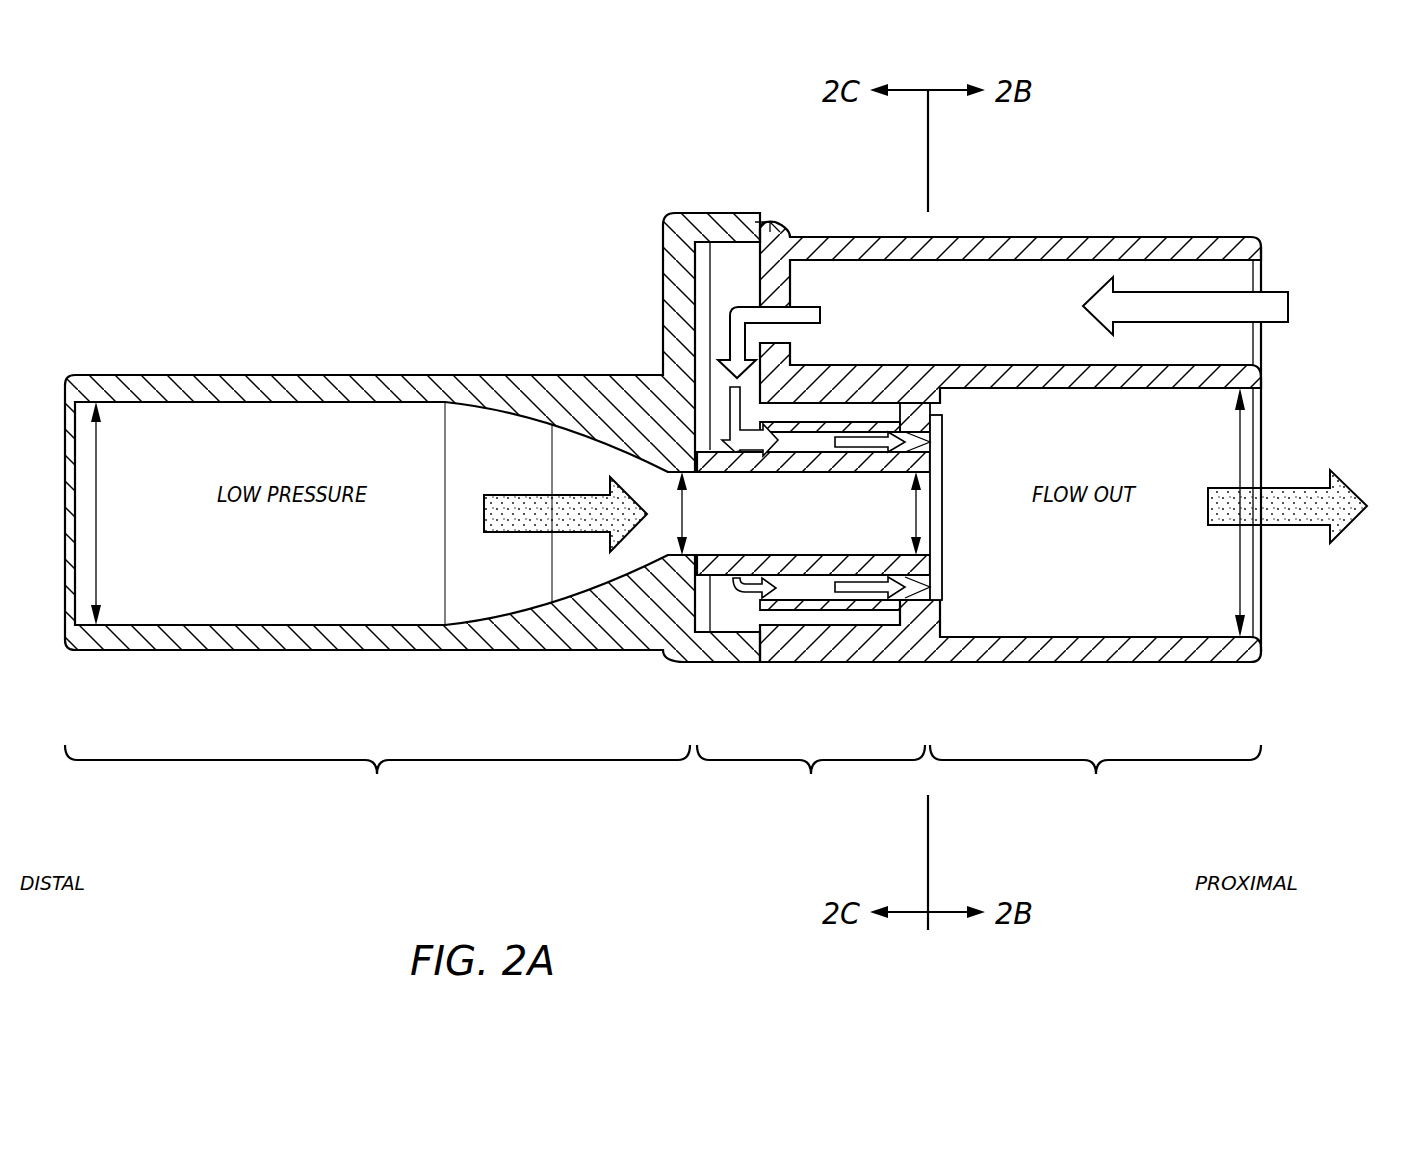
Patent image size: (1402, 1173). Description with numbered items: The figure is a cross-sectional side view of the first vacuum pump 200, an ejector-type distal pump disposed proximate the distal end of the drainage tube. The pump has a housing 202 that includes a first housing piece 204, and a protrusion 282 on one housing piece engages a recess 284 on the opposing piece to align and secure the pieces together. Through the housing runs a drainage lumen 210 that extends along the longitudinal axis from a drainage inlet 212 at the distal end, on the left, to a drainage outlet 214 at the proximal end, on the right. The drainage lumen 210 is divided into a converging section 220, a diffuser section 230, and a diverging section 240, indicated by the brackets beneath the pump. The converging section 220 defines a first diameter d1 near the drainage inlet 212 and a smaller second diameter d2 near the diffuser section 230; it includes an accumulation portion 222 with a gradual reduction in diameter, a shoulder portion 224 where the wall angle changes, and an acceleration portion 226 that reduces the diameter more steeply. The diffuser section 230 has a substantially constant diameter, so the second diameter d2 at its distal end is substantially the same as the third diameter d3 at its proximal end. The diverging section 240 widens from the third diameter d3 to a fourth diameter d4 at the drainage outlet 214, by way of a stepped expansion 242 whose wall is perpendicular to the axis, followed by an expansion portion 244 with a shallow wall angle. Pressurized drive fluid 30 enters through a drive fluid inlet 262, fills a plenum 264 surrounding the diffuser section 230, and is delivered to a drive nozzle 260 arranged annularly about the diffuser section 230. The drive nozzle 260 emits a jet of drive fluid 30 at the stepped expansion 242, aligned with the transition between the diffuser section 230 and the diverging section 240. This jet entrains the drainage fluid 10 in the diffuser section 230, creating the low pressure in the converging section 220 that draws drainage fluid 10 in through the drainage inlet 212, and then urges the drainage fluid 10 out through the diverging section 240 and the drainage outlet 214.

The first vacuum pump 200 is at (248, 194).
The housing 202 is at (487, 338).
The first housing piece 204 is at (320, 375).
The drainage lumen 210 is at (250, 418).
The drainage inlet 212 is at (50, 494).
The drainage outlet 214 is at (1270, 576).
The converging section 220 is at (377, 779).
The accumulation portion 222 is at (200, 618).
The shoulder portion 224 is at (512, 625).
The acceleration portion 226 is at (604, 588).
The diffuser section 230 is at (811, 779).
The diverging section 240 is at (1095, 779).
The stepped expansion 242 is at (950, 595).
The expansion portion 244 is at (1112, 637).
The drive nozzle 260 is at (910, 432).
The drive fluid inlet 262 is at (1265, 268).
The plenum 264 is at (715, 292).
The protrusion 282 is at (765, 222).
The recess 284 is at (778, 232).
The drive fluid 30 is at (1292, 306).
The drainage fluid 10 is at (512, 498).
The first diameter d1 is at (100, 470).
The second diameter d2 is at (686, 520).
The third diameter d3 is at (912, 508).
The fourth diameter d4 is at (1238, 462).